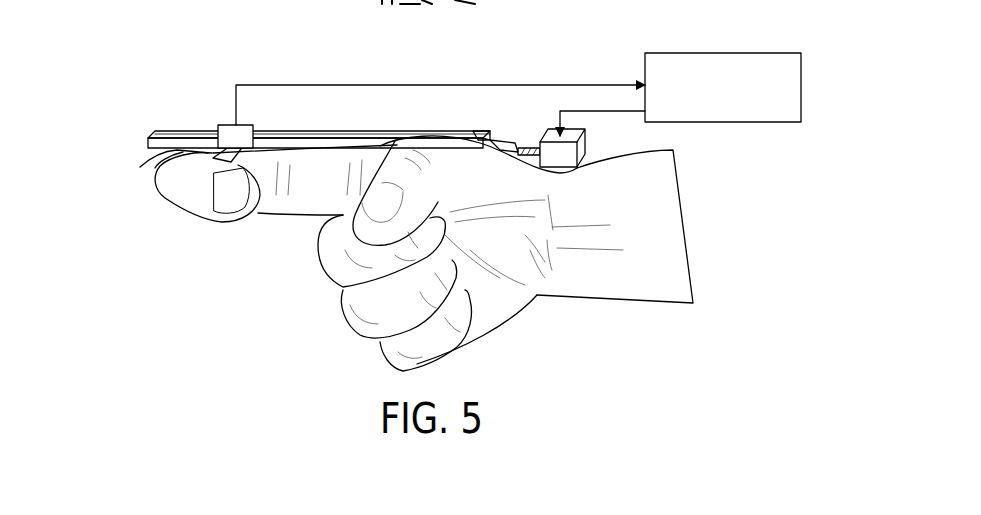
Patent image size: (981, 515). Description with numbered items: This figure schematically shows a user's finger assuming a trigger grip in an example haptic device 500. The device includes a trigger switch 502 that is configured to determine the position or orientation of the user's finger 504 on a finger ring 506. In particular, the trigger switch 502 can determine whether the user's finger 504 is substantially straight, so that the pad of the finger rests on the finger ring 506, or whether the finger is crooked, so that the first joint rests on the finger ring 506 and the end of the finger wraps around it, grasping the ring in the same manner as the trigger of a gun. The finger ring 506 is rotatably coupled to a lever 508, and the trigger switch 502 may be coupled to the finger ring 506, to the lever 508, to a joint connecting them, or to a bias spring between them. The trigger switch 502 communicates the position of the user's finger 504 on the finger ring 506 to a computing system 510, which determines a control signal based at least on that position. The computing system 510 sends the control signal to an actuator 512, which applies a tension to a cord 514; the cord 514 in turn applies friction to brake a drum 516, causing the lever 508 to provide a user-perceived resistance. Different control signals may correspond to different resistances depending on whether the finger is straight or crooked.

The haptic device 500 is at (135, 43).
The trigger switch 502 is at (230, 125).
The user's finger 504 is at (212, 223).
The finger ring 506 is at (200, 152).
The lever 508 is at (185, 130).
The computing system 510 is at (723, 87).
The actuator 512 is at (585, 142).
The cord 514 is at (536, 144).
The drum 516 is at (490, 132).